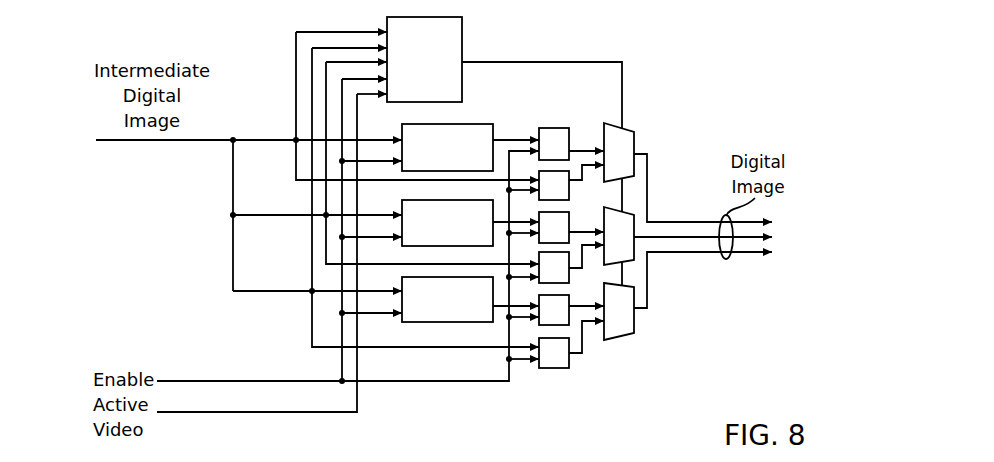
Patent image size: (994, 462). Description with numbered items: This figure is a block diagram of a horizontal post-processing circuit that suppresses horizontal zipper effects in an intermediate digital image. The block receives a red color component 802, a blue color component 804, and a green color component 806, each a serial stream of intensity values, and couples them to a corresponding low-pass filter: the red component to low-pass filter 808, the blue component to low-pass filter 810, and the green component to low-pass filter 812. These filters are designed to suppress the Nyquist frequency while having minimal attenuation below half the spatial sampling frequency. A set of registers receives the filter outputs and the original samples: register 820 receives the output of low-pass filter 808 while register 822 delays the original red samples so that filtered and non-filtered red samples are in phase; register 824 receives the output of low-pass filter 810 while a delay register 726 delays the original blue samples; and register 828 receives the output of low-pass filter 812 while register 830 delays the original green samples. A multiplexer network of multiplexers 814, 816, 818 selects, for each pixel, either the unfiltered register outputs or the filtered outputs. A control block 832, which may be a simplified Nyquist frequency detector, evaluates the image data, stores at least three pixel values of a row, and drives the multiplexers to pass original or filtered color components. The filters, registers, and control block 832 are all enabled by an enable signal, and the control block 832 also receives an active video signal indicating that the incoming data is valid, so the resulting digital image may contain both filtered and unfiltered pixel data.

The red color component 802 is at (250, 138).
The blue color component 804 is at (248, 213).
The green color component 806 is at (248, 289).
The low-pass filter 808 is at (465, 124).
The low-pass filter 810 is at (402, 212).
The low-pass filter 812 is at (425, 324).
The multiplexer 814 is at (635, 135).
The multiplexer 816 is at (634, 212).
The multiplexer 818 is at (634, 318).
The register 820 is at (560, 127).
The register 822 is at (562, 172).
The register 824 is at (565, 211).
The enable register 726 is at (539, 259).
The register 828 is at (565, 294).
The register 830 is at (569, 366).
The control block 832 is at (464, 34).